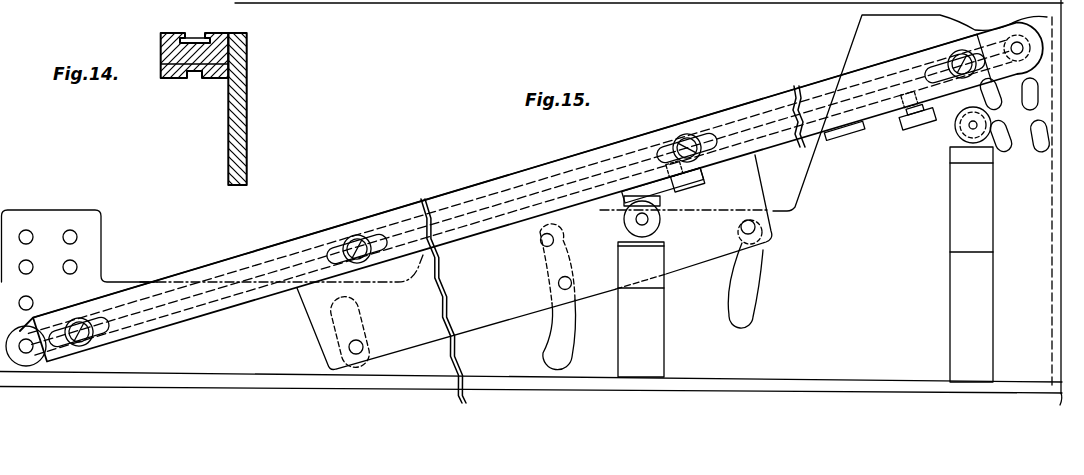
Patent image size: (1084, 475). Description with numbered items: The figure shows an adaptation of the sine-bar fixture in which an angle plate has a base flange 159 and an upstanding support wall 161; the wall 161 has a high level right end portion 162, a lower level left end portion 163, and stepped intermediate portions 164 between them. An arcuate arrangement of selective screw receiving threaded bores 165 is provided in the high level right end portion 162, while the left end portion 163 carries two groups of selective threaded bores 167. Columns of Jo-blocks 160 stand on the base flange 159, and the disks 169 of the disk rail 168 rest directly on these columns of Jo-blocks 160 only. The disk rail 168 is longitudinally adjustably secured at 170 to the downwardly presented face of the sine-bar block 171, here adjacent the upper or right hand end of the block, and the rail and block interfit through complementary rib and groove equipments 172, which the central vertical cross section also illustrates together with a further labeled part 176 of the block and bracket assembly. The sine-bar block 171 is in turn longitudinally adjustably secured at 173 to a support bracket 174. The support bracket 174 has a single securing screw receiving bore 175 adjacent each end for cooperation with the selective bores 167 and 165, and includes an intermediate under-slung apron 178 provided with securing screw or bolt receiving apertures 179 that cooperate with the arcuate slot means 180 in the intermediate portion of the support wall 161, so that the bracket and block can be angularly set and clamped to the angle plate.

In FIG. 15, the base flange 159 is at (541, 3).
In FIG. 15, the Jo-blocks 160 is at (660, 290).
In FIG. 15, the upstanding support wall 161 is at (667, 3).
In FIG. 15, the high level right end portion 162 is at (858, 35).
In FIG. 15, the lower level end portion 163 is at (50, 211).
In FIG. 15, the stepped intermediate portions 164 is at (141, 270).
In FIG. 15, the threaded bores 165 is at (1040, 152).
In FIG. 15, the threaded bores 167 is at (33, 265).
In FIG. 15, the disk rail 168 is at (877, 130).
In FIG. 15, the disks 169 is at (624, 224).
In FIG. 15, the securing means 170 is at (702, 190).
In FIG. 14, the sine-bar block 171 is at (182, 79).
In FIG. 15, the sine-bar block 171 is at (512, 175).
In FIG. 14, the rib and groove equipments 172 is at (198, 82).
In FIG. 15, the rib and groove equipments 172 is at (780, 100).
In FIG. 15, the securing means 173 is at (357, 236).
In FIG. 14, the support bracket 174 is at (247, 73).
In FIG. 15, the support bracket 174 is at (33, 320).
In FIG. 15, the securing screw receiving bore 175 is at (26, 352).
In FIG. 14, the clamping bolt 176 is at (225, 55).
In FIG. 15, the clamping bolt 176 is at (623, 159).
In FIG. 15, the apron 178 is at (525, 327).
In FIG. 15, the bolt receiving apertures 179 is at (362, 345).
In FIG. 15, the arcuate slot means 180 is at (326, 327).